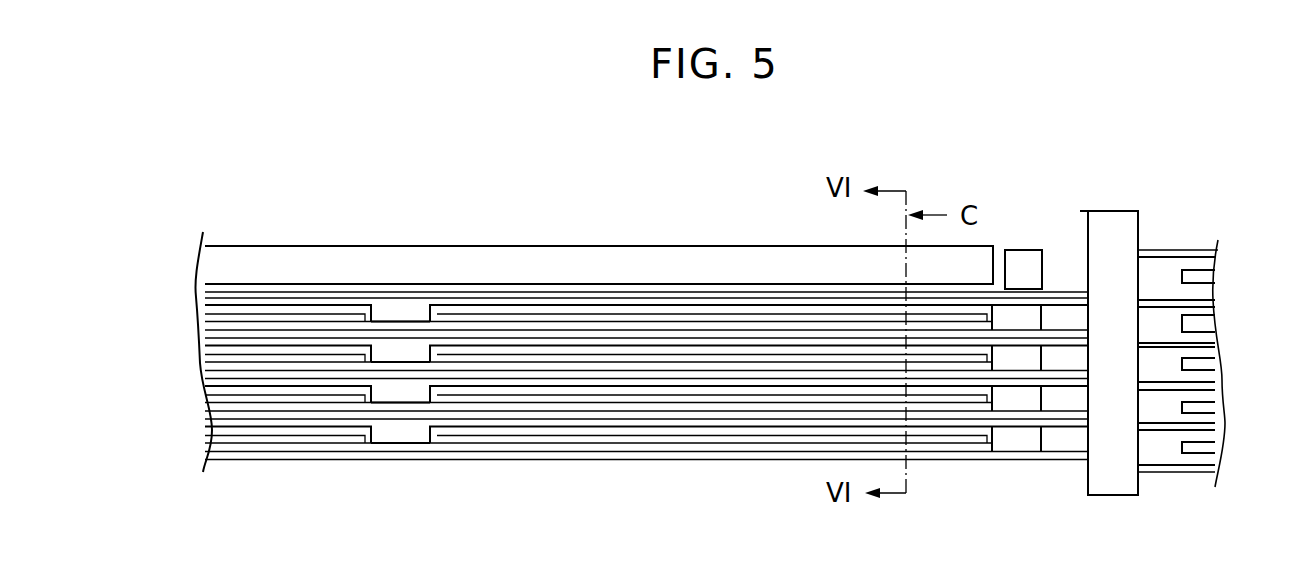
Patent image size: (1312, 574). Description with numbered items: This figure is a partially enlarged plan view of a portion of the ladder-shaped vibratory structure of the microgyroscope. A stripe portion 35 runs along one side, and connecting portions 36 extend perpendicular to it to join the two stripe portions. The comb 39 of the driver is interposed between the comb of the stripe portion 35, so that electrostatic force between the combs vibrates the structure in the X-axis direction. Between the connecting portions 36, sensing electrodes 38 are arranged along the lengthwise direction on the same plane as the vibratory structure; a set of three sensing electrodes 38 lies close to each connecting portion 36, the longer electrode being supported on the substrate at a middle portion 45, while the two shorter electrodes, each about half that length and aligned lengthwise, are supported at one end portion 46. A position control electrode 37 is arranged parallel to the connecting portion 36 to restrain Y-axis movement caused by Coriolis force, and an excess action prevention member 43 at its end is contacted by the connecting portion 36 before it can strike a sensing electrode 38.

The stripe portion 35 is at (1112, 230).
The connecting portion 36 is at (1066, 300).
The position control electrode 37 is at (562, 246).
The sensing electrode 38 is at (850, 298).
The comb 39 is at (1208, 275).
The excess action prevention member 43 is at (1018, 252).
The middle portion 45 is at (394, 305).
The end portion 46 is at (1032, 318).